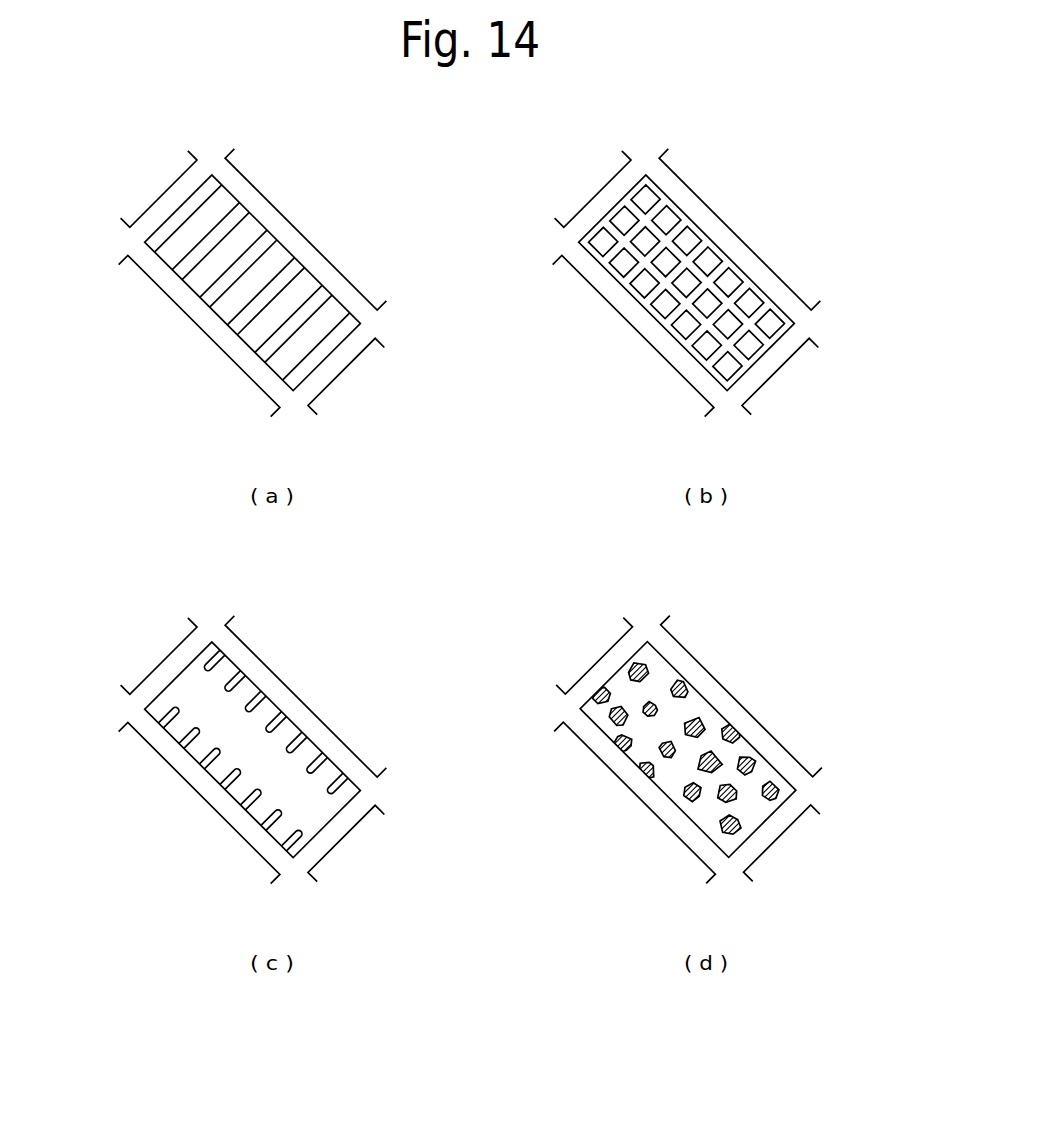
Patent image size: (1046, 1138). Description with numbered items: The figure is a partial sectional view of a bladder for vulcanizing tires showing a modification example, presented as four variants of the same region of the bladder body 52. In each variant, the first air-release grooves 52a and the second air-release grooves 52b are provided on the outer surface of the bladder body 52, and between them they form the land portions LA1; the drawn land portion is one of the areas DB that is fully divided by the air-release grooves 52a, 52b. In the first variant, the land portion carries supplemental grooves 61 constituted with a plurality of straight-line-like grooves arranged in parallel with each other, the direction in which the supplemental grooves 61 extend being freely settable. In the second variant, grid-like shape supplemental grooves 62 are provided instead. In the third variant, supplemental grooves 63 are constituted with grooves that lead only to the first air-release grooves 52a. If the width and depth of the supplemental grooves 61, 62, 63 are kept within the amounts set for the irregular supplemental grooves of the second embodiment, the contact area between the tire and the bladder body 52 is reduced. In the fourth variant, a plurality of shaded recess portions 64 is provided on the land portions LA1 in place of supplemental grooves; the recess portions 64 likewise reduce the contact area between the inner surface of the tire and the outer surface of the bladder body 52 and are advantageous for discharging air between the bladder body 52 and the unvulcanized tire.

The bladder body 52 is at (466, 514).
The first air-release grooves 52a is at (232, 186).
The second air-release grooves 52b is at (146, 228).
The supplemental grooves 61 is at (303, 270).
The supplemental grooves 62 is at (719, 264).
The supplemental grooves 63 is at (303, 737).
The recess portions 64 is at (727, 731).
The areas fully divided by the air-release grooves DB is at (191, 279).
The land portions LA1 is at (220, 328).